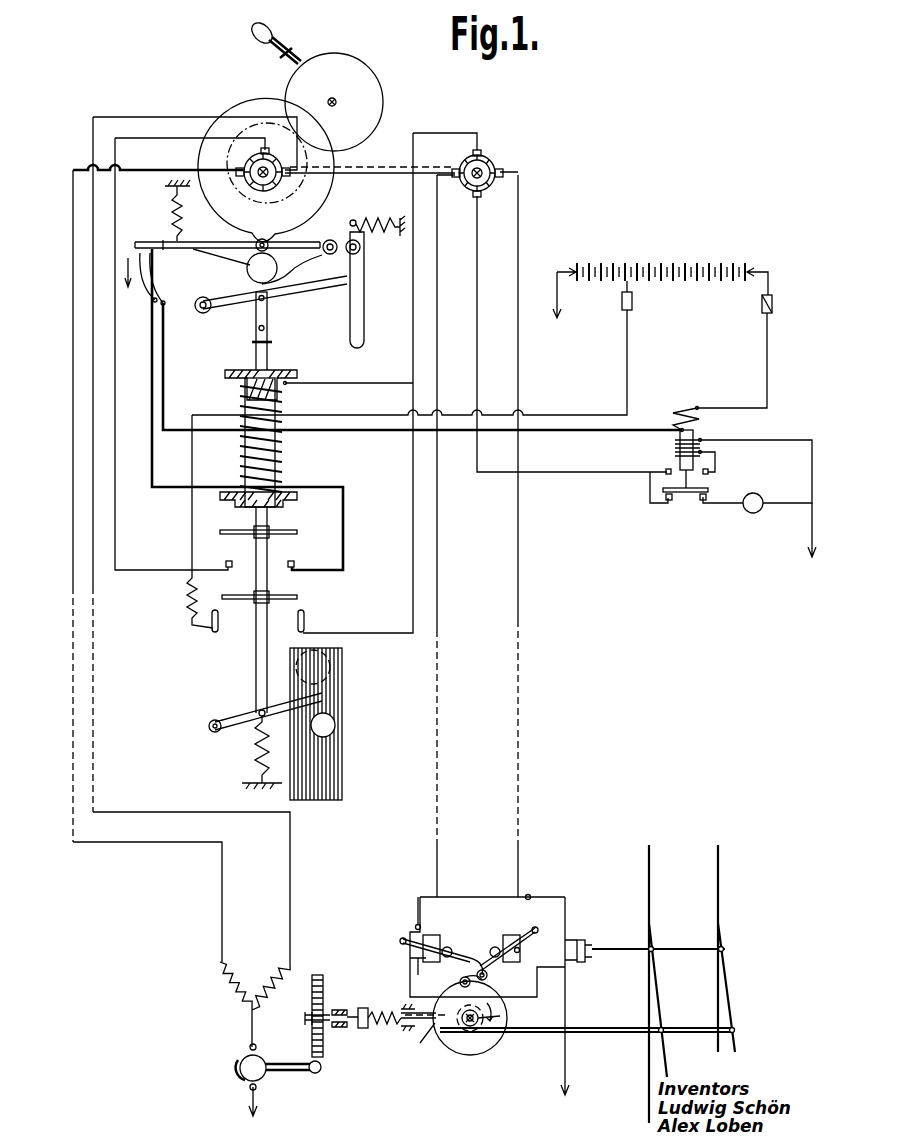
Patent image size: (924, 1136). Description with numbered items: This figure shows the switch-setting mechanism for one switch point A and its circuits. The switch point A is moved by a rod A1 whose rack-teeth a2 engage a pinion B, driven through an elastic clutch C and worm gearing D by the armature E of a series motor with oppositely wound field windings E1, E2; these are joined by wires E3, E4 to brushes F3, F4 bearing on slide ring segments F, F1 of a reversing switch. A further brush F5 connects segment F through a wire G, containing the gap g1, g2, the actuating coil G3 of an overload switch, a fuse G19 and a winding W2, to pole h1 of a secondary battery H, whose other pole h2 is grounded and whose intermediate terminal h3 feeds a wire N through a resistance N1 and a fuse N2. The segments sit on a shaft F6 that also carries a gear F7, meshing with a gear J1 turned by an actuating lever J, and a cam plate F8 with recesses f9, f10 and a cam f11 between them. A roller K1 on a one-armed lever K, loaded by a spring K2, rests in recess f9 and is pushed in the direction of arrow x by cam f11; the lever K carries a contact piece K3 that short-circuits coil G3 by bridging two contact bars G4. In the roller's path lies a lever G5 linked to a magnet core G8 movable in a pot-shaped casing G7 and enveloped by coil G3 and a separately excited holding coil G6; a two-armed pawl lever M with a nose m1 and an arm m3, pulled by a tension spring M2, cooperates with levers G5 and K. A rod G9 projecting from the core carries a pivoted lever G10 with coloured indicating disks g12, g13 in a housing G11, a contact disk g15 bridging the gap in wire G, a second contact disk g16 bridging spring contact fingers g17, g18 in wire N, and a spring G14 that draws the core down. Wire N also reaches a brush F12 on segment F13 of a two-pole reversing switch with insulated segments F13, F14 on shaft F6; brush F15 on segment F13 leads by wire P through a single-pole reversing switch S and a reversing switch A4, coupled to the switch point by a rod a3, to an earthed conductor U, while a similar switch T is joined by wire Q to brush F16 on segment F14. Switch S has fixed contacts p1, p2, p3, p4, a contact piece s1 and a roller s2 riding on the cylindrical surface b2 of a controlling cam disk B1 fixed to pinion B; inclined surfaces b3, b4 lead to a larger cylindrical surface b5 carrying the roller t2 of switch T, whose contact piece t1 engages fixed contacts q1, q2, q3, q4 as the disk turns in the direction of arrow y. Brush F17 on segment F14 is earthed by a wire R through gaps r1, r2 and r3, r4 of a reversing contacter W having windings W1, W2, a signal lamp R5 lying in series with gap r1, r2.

The actuating lever J is at (275, 40).
The gear J1 is at (366, 68).
The slide ring segment F is at (260, 133).
The slide ring segment F1 is at (256, 176).
The brush F3 is at (239, 167).
The brush F4 is at (286, 178).
The brush F5 is at (270, 148).
The gear F7 is at (263, 123).
The cam plate F8 is at (334, 148).
The recess f9 is at (350, 224).
The recess f10 is at (203, 148).
The cam f11 is at (165, 186).
The one-armed lever K is at (193, 250).
The roller K1 is at (250, 252).
The spring K2 is at (174, 224).
The contact piece K3 is at (135, 245).
The two-armed pawl lever M is at (364, 282).
The tension spring M2 is at (383, 222).
The nose m1 is at (350, 344).
The arm m3 is at (316, 264).
The sliding contact bars G4 is at (150, 302).
The arrow x is at (130, 284).
The one-armed lever G5 is at (292, 298).
The pot-shaped casing G7 is at (250, 369).
The holding coil G6 is at (242, 395).
The magnet core G8 is at (246, 455).
The actuating coil G3 is at (284, 457).
The rod G9 is at (256, 672).
The contact disk g15 is at (292, 532).
The second contact disk g16 is at (298, 598).
The gap contact g1 is at (226, 564).
The gap contact g2 is at (294, 564).
The spring contact finger g17 is at (212, 630).
The spring contact finger g18 is at (304, 617).
The resistance N1 is at (188, 592).
The lever G10 is at (218, 722).
The housing G11 is at (341, 772).
The indicating disk g12 is at (336, 725).
The indicating disk g13 is at (330, 668).
The spring G14 is at (257, 762).
The brush F16 is at (456, 168).
The brush F12 is at (481, 150).
The slide-ring segment F13 is at (493, 170).
The brush F15 is at (503, 173).
The slide-ring segment F14 is at (470, 196).
The brush F17 is at (481, 199).
The shaft F6 is at (393, 171).
The wire N is at (452, 133).
The secondary battery H is at (691, 263).
The battery pole h1 is at (758, 268).
The battery pole h2 is at (573, 268).
The intermediate terminal h3 is at (628, 266).
The fuse N2 is at (632, 302).
The fuse G19 is at (772, 304).
The wire G is at (767, 346).
The reversing contacter W is at (680, 452).
The exciting winding W1 is at (712, 452).
The exciting winding W2 is at (704, 416).
The gap contact r1 is at (670, 502).
The gap contact r2 is at (703, 502).
The gap contact r3 is at (666, 475).
The gap contact r4 is at (710, 474).
The wire R is at (578, 472).
The signal lamp R5 is at (752, 514).
The wire Q is at (437, 545).
The wire P is at (518, 522).
The armature E is at (244, 1082).
The field winding E1 is at (232, 988).
The field winding E2 is at (280, 994).
The wire E3 is at (136, 843).
The wire E4 is at (290, 868).
The worm gearing D is at (321, 1075).
The elastic clutch C is at (364, 1030).
The single-pole reversing switch S is at (479, 897).
The fixed contact q1 is at (433, 935).
The fixed contact p1 is at (511, 935).
The fixed contact q2 is at (416, 925).
The fixed contact p2 is at (530, 895).
The fixed contact q3 is at (416, 962).
The fixed contact q4 is at (403, 945).
The fixed contact p3 is at (540, 962).
The fixed contact p4 is at (537, 950).
The contact piece t1 is at (402, 938).
The roller t2 is at (479, 968).
The contact piece s1 is at (537, 931).
The roller s2 is at (460, 983).
The single-pole reversing switch T is at (419, 978).
The inclined surface b3 is at (519, 962).
The reversing switch A4 is at (592, 944).
The rod a3 is at (600, 958).
The conductor U is at (565, 1055).
The rod A1 is at (600, 1034).
The switch point A is at (660, 997).
The pinion B is at (484, 1050).
The controlling cam disk B1 is at (462, 1052).
The cylindrical surface b2 is at (440, 1018).
The inclined surface b4 is at (448, 1032).
The second cylindrical surface b5 is at (476, 1055).
The arrow y is at (496, 1011).
The rack-teeth a2 is at (500, 1016).